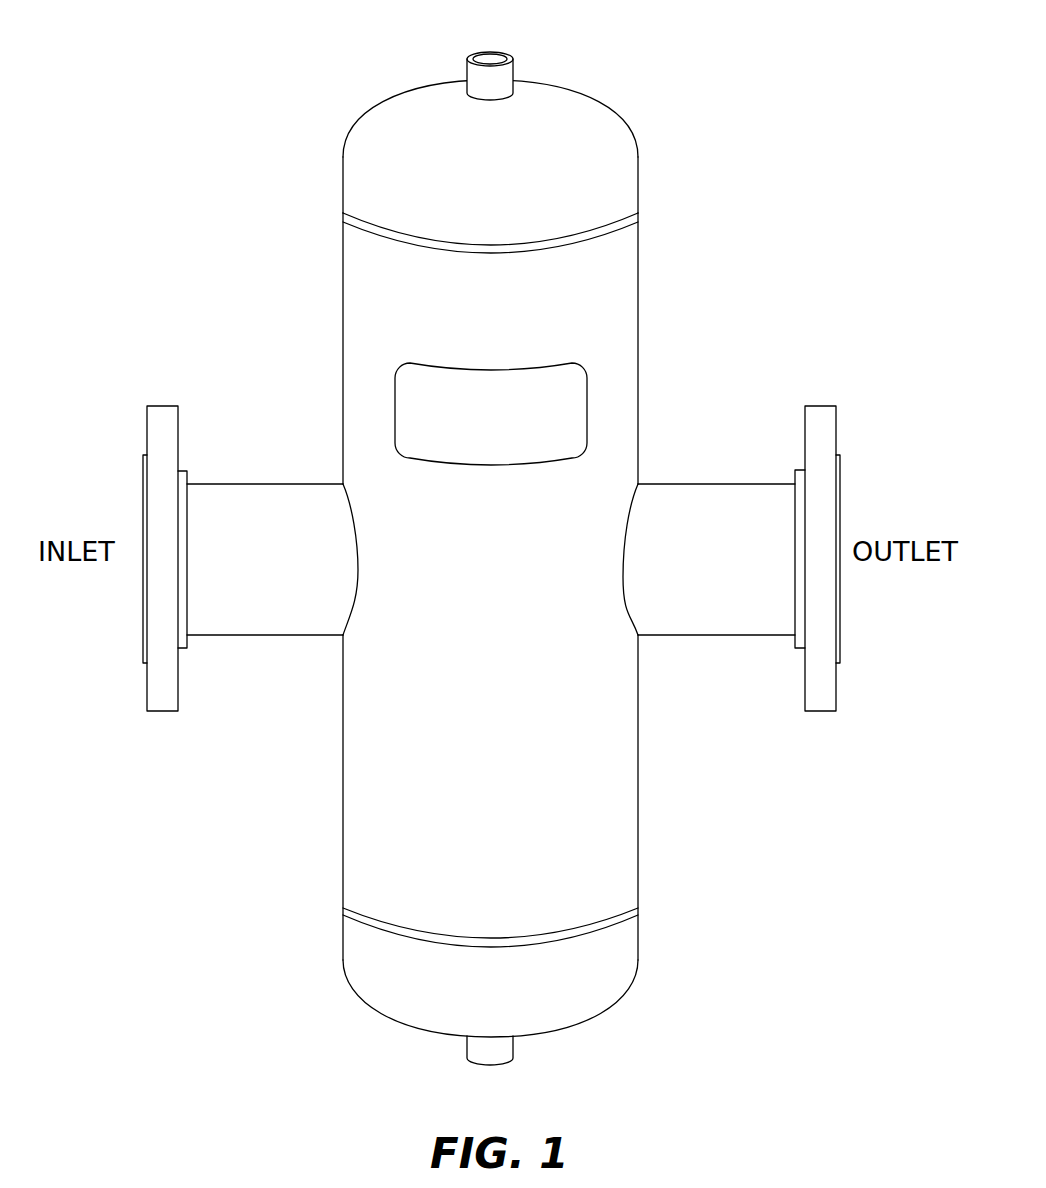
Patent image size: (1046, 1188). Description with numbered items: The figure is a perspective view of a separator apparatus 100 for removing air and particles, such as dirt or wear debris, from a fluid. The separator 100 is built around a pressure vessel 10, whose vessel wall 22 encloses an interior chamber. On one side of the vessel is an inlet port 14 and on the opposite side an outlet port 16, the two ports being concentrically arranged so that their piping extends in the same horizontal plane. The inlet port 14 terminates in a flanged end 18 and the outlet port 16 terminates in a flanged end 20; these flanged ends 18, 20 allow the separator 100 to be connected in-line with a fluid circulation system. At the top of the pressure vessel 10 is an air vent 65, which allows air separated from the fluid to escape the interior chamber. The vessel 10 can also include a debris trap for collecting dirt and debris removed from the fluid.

The separator apparatus 100 is at (525, 540).
The pressure vessel 10 is at (490, 540).
The vessel wall 22 is at (343, 288).
The air vent 65 is at (514, 61).
The inlet port 14 is at (345, 520).
The outlet port 16 is at (623, 583).
The flanged end 18 is at (161, 406).
The flanged end 20 is at (836, 418).